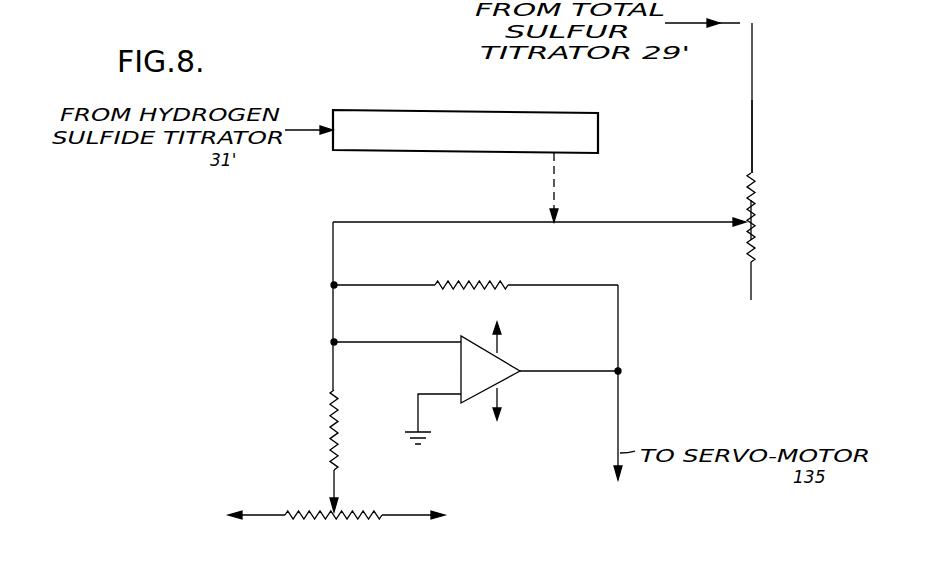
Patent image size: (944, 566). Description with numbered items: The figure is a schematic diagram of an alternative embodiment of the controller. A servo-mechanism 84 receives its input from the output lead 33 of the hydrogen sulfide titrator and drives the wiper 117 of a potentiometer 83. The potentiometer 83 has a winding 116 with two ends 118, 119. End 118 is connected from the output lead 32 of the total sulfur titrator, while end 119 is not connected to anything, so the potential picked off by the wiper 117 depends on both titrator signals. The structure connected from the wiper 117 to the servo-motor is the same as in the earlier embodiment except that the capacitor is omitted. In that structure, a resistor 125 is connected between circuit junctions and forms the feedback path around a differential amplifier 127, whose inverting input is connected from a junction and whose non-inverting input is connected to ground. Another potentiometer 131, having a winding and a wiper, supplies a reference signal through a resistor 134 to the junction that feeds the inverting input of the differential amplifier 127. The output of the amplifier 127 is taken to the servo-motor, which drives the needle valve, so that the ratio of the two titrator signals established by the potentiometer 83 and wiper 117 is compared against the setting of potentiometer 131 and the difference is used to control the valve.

The titrator output lead 33 is at (297, 128).
The servo-mechanism 84 is at (430, 111).
The output lead of total sulfur titrator 32 is at (735, 23).
The winding end 118 is at (752, 140).
The potentiometer 83 is at (778, 195).
The potentiometer winding 116 is at (753, 210).
The winding end 119 is at (751, 292).
The wiper 117 is at (671, 228).
The resistor 125 is at (462, 283).
The differential amplifier 127 is at (522, 355).
The resistor 134 is at (334, 424).
The potentiometer 131 is at (318, 532).